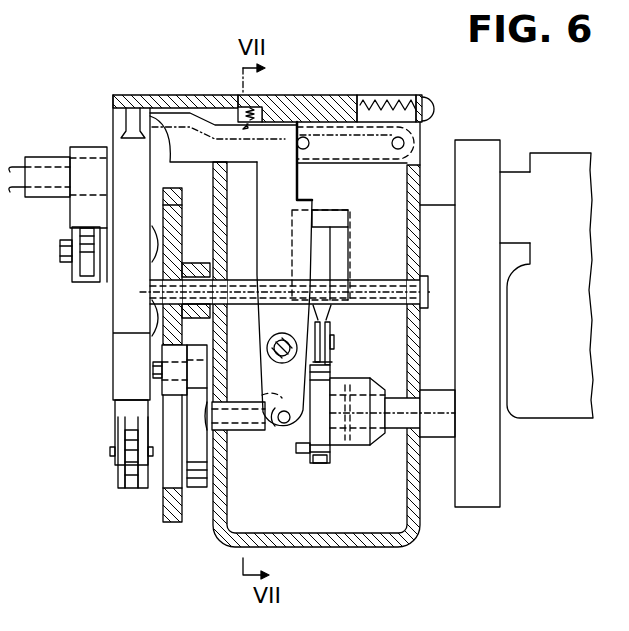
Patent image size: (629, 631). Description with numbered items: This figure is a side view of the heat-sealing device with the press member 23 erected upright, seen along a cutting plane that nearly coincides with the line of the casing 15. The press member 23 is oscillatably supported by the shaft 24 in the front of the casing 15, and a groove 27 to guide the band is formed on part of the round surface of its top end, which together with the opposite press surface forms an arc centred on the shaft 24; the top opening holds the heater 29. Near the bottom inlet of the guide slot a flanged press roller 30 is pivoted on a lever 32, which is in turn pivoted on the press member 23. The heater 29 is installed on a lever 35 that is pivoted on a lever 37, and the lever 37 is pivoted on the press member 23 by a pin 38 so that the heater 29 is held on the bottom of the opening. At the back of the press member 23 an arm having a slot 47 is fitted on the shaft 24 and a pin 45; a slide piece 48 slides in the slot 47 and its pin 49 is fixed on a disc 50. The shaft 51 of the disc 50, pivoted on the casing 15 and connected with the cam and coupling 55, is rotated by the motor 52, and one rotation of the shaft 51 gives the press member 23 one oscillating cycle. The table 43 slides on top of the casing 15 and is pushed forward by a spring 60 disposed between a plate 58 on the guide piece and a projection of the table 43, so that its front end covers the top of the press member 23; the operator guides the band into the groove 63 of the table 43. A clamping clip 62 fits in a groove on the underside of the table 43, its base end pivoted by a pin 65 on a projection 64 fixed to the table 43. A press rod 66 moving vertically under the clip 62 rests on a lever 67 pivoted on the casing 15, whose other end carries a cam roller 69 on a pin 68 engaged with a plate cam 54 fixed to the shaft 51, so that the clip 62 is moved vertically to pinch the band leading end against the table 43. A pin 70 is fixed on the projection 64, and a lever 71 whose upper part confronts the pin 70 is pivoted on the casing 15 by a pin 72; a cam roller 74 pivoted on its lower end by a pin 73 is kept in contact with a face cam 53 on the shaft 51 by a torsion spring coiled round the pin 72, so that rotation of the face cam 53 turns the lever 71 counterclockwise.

The casing 15 is at (368, 540).
The press member 23 is at (128, 325).
The shaft 24 is at (380, 300).
The groove 27 is at (131, 115).
The heater 29 is at (53, 165).
The flanged press roller 30 is at (133, 473).
The lever 32 is at (115, 412).
The lever 35 is at (88, 147).
The lever 37 is at (84, 270).
The pin 38 is at (60, 256).
The table 43 is at (300, 105).
The pin 45 is at (170, 213).
The slot 47 is at (172, 470).
The slide piece 48 is at (168, 355).
The pin 49 is at (155, 372).
The disc 50 is at (193, 490).
The shaft 51 is at (243, 420).
The motor 52 is at (572, 418).
The face cam 53 is at (305, 455).
The plate cam 54 is at (322, 466).
The cam and coupling 55 is at (355, 440).
The plate 58 is at (418, 97).
The spring 60 is at (393, 100).
The clamping clip 62 is at (183, 117).
The groove 63 is at (170, 97).
The projection 64 is at (338, 135).
The pin 65 is at (398, 150).
The press rod 66 is at (297, 187).
The lever 67 is at (330, 360).
The pin 68 is at (334, 342).
The cam roller 69 is at (322, 330).
The pin 70 is at (310, 143).
The lever 71 is at (270, 208).
The pin 72 is at (270, 348).
The pin 73 is at (278, 405).
The cam roller 74 is at (282, 438).